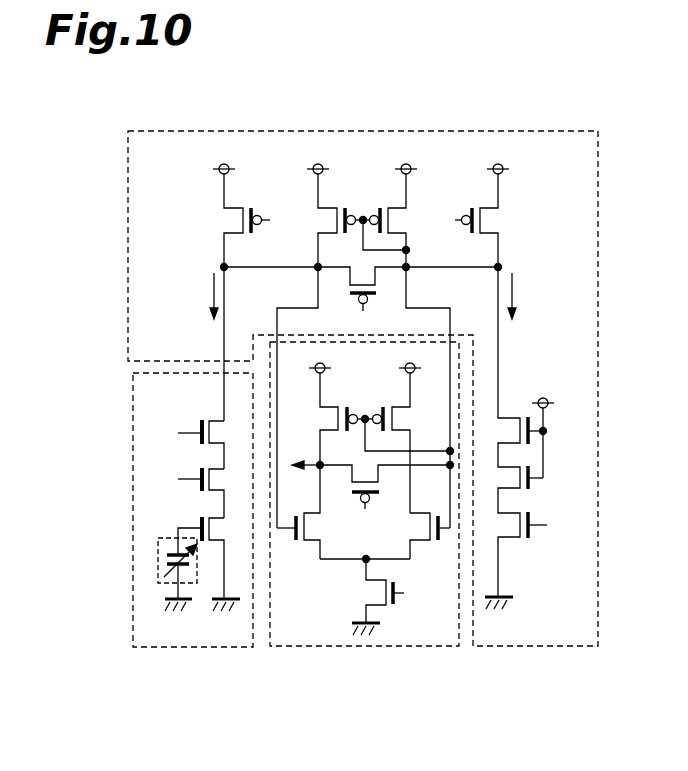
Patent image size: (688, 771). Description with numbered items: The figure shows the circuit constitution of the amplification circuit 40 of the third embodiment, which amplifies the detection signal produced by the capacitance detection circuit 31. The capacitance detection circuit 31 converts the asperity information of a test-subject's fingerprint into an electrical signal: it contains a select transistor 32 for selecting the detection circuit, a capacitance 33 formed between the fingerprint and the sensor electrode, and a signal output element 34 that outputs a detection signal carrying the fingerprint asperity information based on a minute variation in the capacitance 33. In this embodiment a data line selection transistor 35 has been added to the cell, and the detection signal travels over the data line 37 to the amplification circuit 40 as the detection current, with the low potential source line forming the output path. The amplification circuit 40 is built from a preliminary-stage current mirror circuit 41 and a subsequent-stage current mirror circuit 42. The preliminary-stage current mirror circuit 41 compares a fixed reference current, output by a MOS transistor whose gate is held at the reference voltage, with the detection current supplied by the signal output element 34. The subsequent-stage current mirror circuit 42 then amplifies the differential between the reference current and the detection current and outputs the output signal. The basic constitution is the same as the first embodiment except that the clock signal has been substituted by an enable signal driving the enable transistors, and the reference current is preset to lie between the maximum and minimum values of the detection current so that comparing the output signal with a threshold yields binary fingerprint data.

The amplification circuit 40 is at (523, 120).
The preliminary-stage current mirror circuit 41 is at (341, 130).
The subsequent-stage current mirror circuit 42 is at (398, 648).
The capacitance detection circuit 31 is at (213, 648).
The select transistor 32 is at (201, 431).
The capacitance 33 is at (158, 553).
The signal output element 34 is at (201, 528).
The data line selection transistor 35 is at (201, 479).
The data line 37 is at (224, 357).